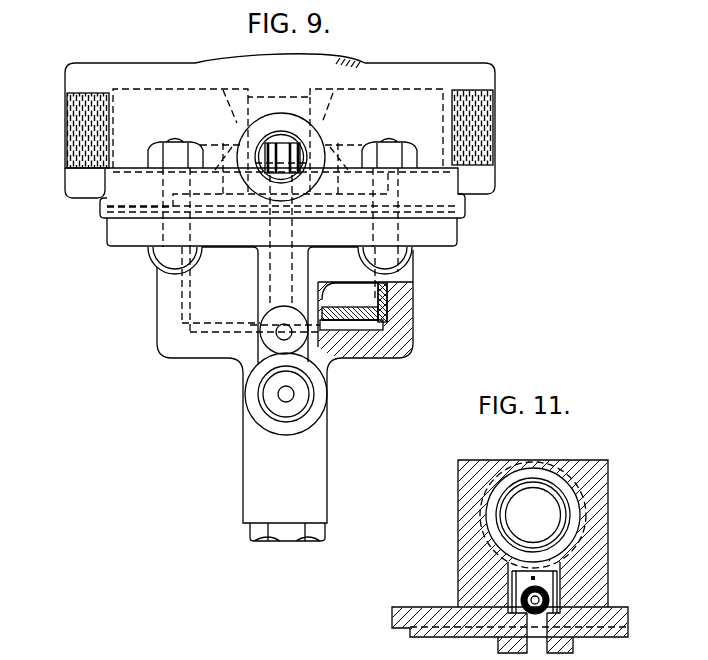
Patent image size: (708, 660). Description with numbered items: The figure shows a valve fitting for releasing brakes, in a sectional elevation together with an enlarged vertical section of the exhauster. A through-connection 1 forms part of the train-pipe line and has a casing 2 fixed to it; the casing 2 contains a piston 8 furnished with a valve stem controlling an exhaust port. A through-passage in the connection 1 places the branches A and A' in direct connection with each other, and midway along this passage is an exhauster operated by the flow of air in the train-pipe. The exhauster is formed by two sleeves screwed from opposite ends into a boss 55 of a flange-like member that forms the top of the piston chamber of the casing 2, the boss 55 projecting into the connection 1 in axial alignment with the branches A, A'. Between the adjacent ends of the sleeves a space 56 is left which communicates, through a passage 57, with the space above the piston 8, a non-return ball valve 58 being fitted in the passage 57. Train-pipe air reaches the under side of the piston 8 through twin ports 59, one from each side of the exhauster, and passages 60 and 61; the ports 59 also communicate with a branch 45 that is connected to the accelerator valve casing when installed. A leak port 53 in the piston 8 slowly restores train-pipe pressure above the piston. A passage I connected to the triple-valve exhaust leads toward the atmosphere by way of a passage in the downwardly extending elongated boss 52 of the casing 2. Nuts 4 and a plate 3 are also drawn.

In FIG. 9, the through-connection 1 is at (165, 72).
In FIG. 9, the branch A is at (65, 130).
In FIG. 9, the branch A' is at (491, 127).
In FIG. 9, the boss 55 is at (242, 97).
In FIG. 11, the boss 55 is at (472, 520).
In FIG. 9, the nut 4 is at (173, 137).
In FIG. 9, the branch 45 is at (298, 127).
In FIG. 9, the twin ports 59 is at (273, 167).
In FIG. 9, the plate 3 is at (444, 231).
In FIG. 9, the elongated boss 52 is at (252, 475).
In FIG. 9, the passage I is at (292, 398).
In FIG. 9, the passage 61 is at (283, 332).
In FIG. 9, the passage 60 is at (282, 268).
In FIG. 9, the casing 2 is at (398, 308).
In FIG. 9, the leak port 53 is at (330, 304).
In FIG. 9, the piston 8 is at (357, 318).
In FIG. 11, the space 56 is at (560, 493).
In FIG. 11, the passage 57 is at (517, 578).
In FIG. 11, the non-return ball valve 58 is at (513, 600).